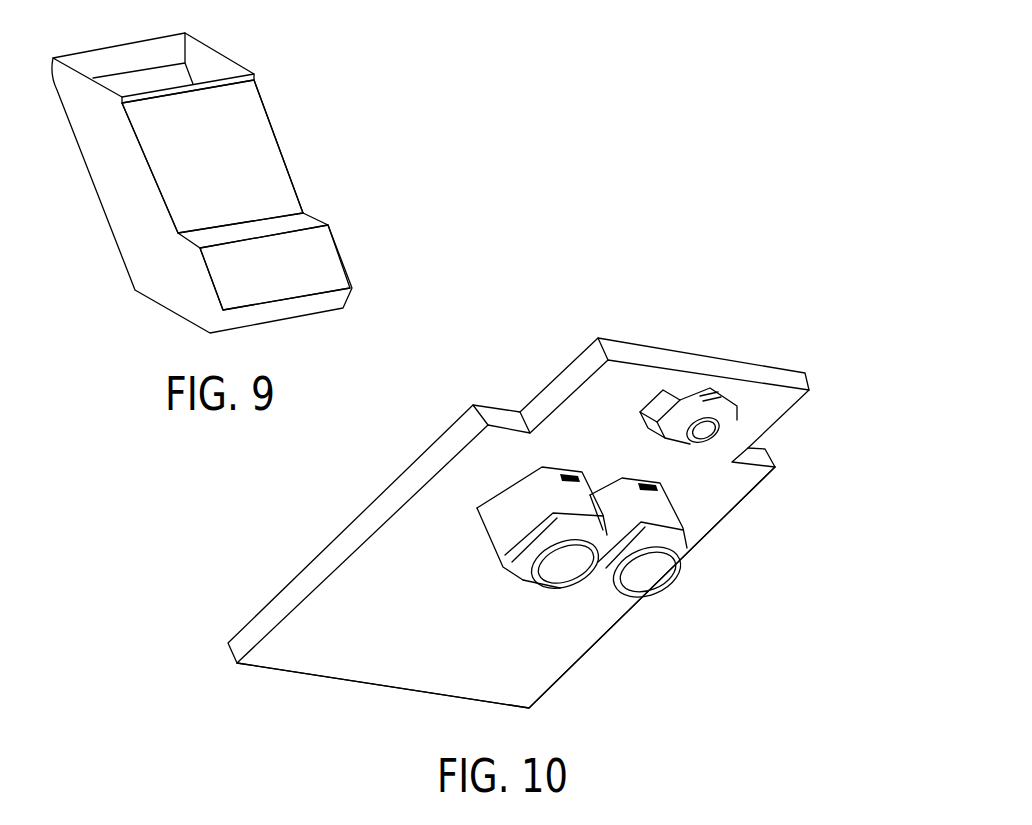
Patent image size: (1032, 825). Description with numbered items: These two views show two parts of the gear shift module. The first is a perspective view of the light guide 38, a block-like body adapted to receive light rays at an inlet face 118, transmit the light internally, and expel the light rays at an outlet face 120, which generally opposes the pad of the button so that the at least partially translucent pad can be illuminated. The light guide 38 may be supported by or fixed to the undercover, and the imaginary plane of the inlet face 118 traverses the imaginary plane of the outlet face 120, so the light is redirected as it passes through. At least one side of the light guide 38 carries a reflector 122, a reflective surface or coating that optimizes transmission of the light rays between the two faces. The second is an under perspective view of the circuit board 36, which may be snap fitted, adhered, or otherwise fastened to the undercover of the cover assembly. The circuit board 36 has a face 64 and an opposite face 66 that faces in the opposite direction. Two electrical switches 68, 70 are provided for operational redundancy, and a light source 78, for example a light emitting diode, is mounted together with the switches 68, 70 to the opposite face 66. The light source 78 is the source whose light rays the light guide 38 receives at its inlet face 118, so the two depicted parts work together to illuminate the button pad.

In FIG. 9, the light guide 38 is at (304, 103).
In FIG. 9, the outlet face 120 is at (167, 78).
In FIG. 9, the reflector 122 is at (240, 182).
In FIG. 9, the inlet face 118 is at (305, 267).
In FIG. 10, the circuit board 36 is at (844, 314).
In FIG. 10, the face 64 is at (353, 522).
In FIG. 10, the opposite face 66 is at (557, 655).
In FIG. 10, the electrical switch 68 is at (513, 497).
In FIG. 10, the electrical switch 70 is at (650, 577).
In FIG. 10, the light source 78 is at (725, 390).